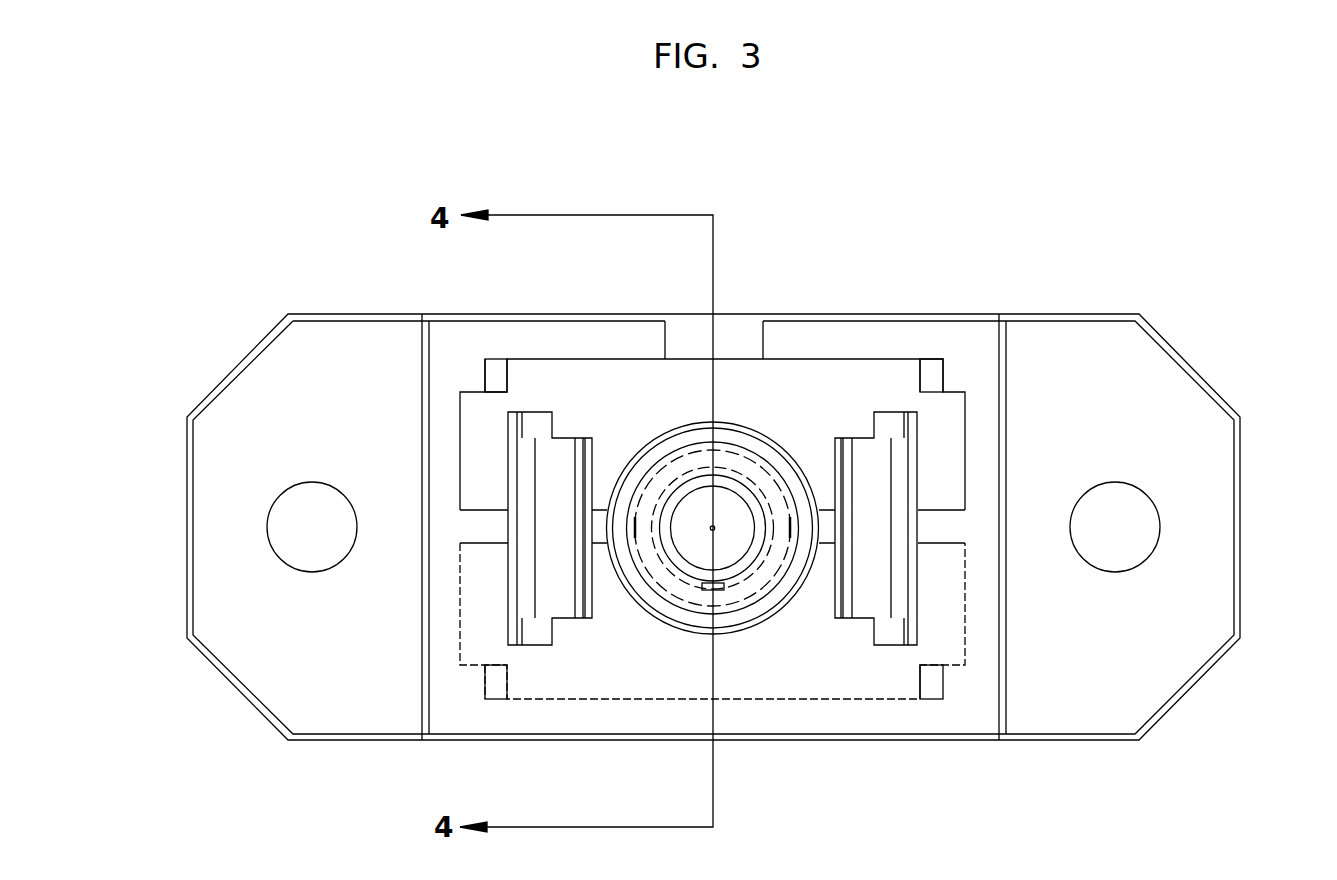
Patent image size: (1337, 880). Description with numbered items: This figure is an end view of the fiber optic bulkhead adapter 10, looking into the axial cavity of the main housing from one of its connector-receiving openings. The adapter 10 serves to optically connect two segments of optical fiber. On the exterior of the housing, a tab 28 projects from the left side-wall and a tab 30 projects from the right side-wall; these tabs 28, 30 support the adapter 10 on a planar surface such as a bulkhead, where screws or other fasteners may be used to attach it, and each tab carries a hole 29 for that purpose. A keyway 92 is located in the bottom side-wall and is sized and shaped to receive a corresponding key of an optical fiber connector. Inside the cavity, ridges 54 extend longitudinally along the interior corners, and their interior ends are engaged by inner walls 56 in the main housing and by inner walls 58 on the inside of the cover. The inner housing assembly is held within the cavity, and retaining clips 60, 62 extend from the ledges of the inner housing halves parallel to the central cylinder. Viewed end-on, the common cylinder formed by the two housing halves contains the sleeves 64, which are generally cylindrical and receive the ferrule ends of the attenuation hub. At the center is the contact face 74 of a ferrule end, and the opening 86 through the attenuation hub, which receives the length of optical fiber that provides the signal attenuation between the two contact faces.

The adapter 10 is at (276, 266).
The tab 28 is at (327, 660).
The mounting hole 29 is at (267, 535).
The tab 30 is at (1084, 704).
The ridges 54 is at (487, 365).
The inner walls 56 is at (626, 402).
The inner walls 58 is at (622, 670).
The retaining clip 60 is at (548, 488).
The retaining clip 62 is at (875, 590).
The sleeves 64 is at (735, 587).
The contact face 74 is at (728, 505).
The opening 86 is at (714, 530).
The keyway 92 is at (737, 337).